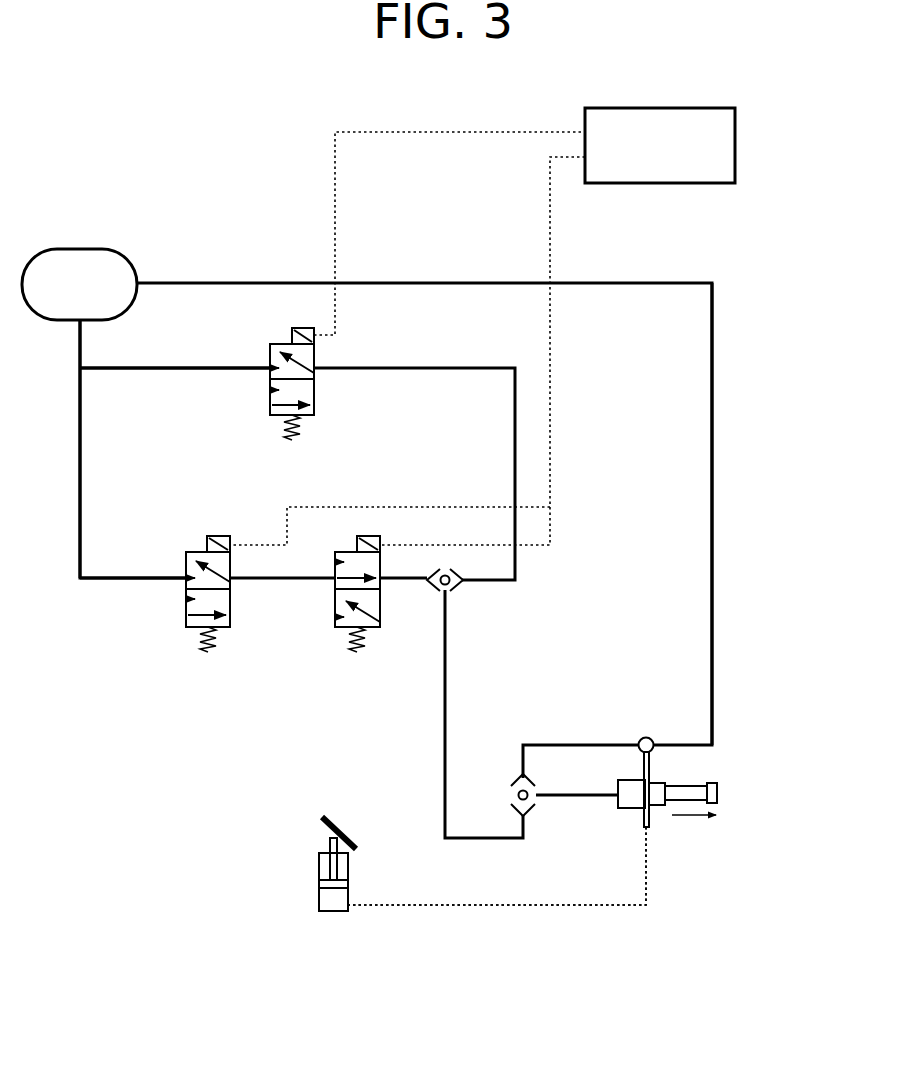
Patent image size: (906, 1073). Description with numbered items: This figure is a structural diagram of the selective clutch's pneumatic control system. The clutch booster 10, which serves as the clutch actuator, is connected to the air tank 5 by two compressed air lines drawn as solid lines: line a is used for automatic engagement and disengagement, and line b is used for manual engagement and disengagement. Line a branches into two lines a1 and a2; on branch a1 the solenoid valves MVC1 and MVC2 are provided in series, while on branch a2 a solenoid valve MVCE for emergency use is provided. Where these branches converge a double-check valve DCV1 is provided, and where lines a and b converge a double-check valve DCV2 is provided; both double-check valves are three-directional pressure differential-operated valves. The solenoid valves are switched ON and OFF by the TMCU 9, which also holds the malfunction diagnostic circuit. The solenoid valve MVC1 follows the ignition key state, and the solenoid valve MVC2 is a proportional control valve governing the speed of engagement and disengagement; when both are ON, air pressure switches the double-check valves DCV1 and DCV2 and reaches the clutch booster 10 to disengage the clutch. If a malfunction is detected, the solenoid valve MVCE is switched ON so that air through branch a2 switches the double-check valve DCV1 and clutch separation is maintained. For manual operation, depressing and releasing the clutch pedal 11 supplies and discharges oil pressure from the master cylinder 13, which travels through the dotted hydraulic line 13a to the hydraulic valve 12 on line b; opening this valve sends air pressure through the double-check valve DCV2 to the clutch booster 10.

The air tank 5 is at (79, 284).
The TMCU 9 is at (660, 145).
The air line b is at (634, 268).
The air line a is at (136, 620).
The branch line a1 is at (80, 428).
The branch line a2 is at (185, 368).
The solenoid valve for emergency use MVCE is at (298, 401).
The solenoid valve MVC1 is at (214, 614).
The solenoid valve MVC2 is at (359, 612).
The double-check valve DCV1 is at (460, 586).
The double-check valve DCV2 is at (514, 785).
The clutch booster 10 is at (625, 810).
The clutch pedal 11 is at (338, 823).
The hydraulic valve 12 is at (645, 737).
The master cylinder 13 is at (319, 898).
The hydraulic line 13a is at (497, 905).